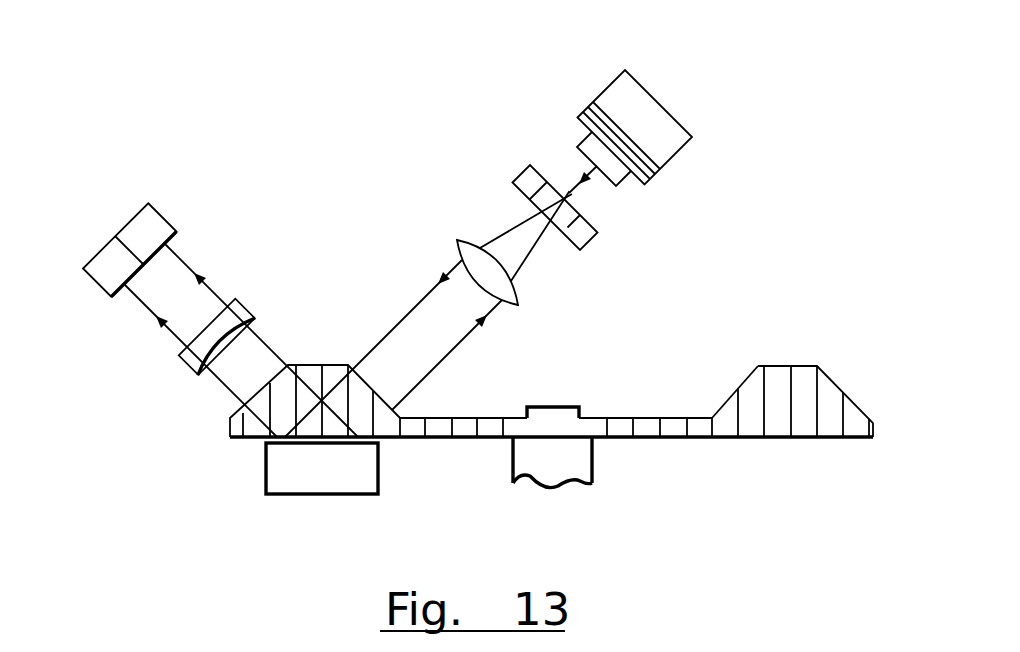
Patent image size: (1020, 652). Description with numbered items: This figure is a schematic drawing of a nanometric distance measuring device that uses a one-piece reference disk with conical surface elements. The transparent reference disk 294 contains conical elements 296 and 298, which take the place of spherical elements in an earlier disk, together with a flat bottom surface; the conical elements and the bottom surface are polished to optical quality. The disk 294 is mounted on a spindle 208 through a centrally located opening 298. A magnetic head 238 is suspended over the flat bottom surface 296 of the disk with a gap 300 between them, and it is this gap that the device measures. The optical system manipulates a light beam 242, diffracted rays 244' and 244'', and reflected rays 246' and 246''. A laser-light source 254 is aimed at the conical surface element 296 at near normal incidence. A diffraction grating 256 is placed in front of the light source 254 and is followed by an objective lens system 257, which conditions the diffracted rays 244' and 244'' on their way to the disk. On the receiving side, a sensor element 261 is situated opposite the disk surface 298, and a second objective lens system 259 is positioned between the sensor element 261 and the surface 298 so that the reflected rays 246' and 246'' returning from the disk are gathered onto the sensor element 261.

The sensor element 261 is at (132, 235).
The objective lens system 259 is at (240, 300).
The reflected ray 246' is at (278, 341).
The reflected ray 246'' is at (166, 360).
The laser-light source 254 is at (638, 125).
The light beam 242 is at (572, 191).
The diffraction grating 256 is at (532, 167).
The objective lens system 257 is at (513, 298).
The diffracted ray 244' is at (373, 316).
The diffracted ray 244'' is at (496, 355).
The conical surface element 296 is at (245, 437).
The conical surface element 298 is at (590, 437).
The transparent reference disk 294 is at (803, 403).
The gap 300 is at (378, 440).
The magnetic head 238 is at (327, 473).
The spindle 208 is at (558, 458).